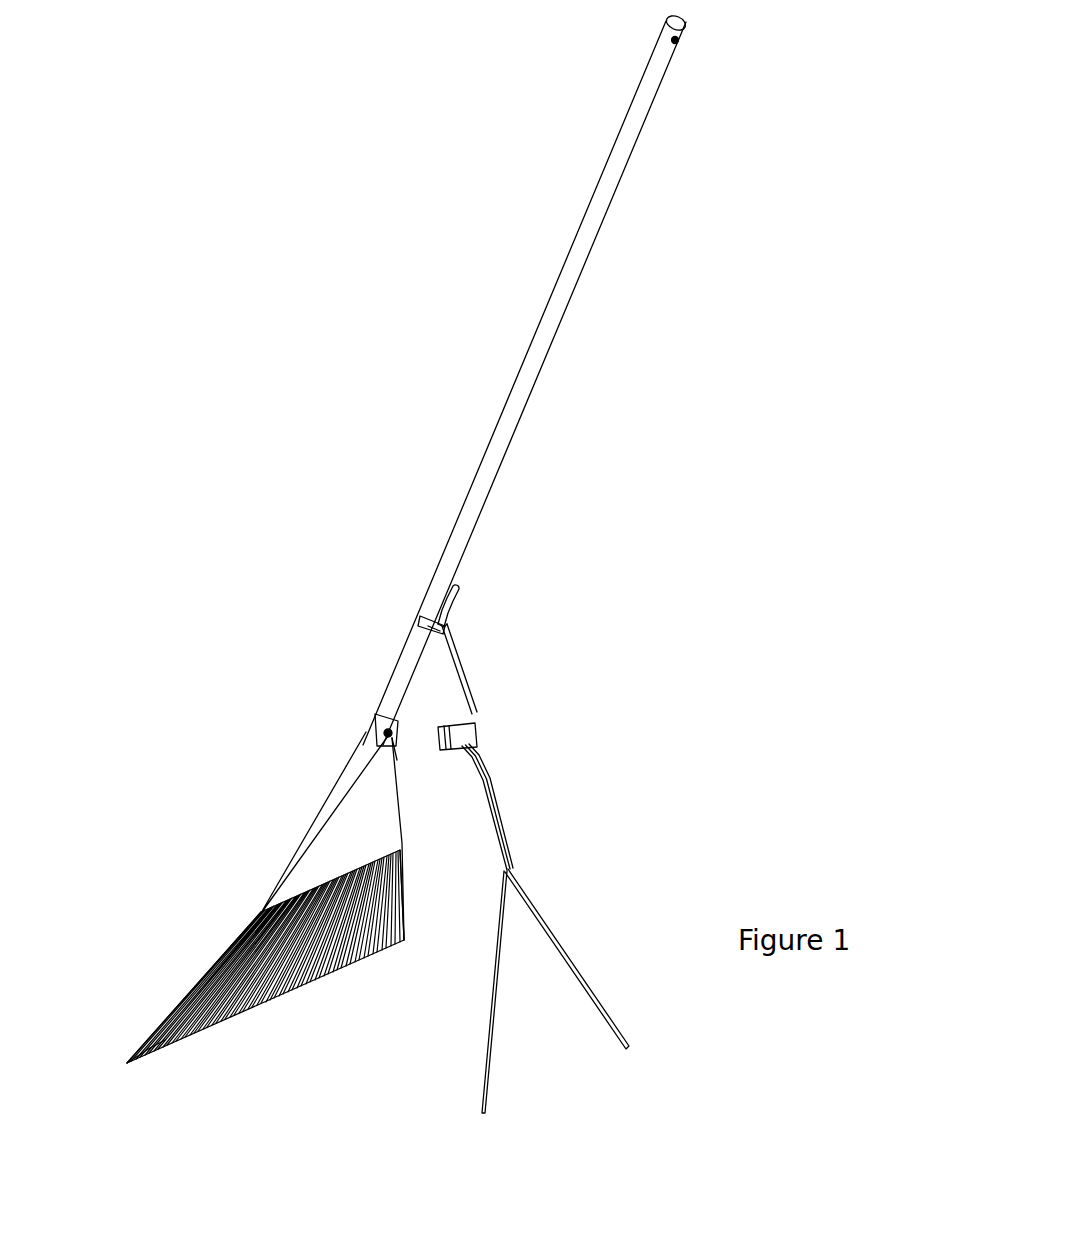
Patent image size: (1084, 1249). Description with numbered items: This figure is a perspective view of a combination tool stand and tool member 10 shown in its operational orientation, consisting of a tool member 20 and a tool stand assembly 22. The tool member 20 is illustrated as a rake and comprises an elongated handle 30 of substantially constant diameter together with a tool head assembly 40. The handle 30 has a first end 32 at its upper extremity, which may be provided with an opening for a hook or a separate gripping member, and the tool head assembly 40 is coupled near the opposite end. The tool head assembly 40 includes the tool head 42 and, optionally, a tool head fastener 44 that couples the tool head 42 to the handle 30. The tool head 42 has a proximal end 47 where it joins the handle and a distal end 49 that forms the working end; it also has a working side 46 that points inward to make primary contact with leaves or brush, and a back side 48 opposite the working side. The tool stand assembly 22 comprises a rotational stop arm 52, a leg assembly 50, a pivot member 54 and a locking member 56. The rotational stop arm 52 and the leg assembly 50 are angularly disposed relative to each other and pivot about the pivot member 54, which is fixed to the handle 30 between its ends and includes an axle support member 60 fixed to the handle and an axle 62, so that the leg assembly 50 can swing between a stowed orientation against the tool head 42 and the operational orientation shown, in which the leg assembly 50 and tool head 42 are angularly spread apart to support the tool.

The combination tool stand and tool member 10 is at (665, 553).
The tool member 20 is at (430, 528).
The tool stand assembly 22 is at (545, 777).
The handle 30 is at (556, 283).
The first end 32 is at (690, 38).
The tool head assembly 40 is at (262, 912).
The tool head 42 is at (268, 855).
The tool head fastener 44 is at (385, 733).
The working side 46 is at (148, 1030).
The proximal end 47 is at (395, 735).
The back side 48 is at (403, 810).
The distal end 49 is at (240, 1010).
The leg assembly 50 is at (512, 677).
The rotational stop arm 52 is at (426, 597).
The pivot member 54 is at (420, 623).
The locking member 56 is at (492, 716).
The axle support member 60 is at (428, 635).
The axle 62 is at (468, 615).